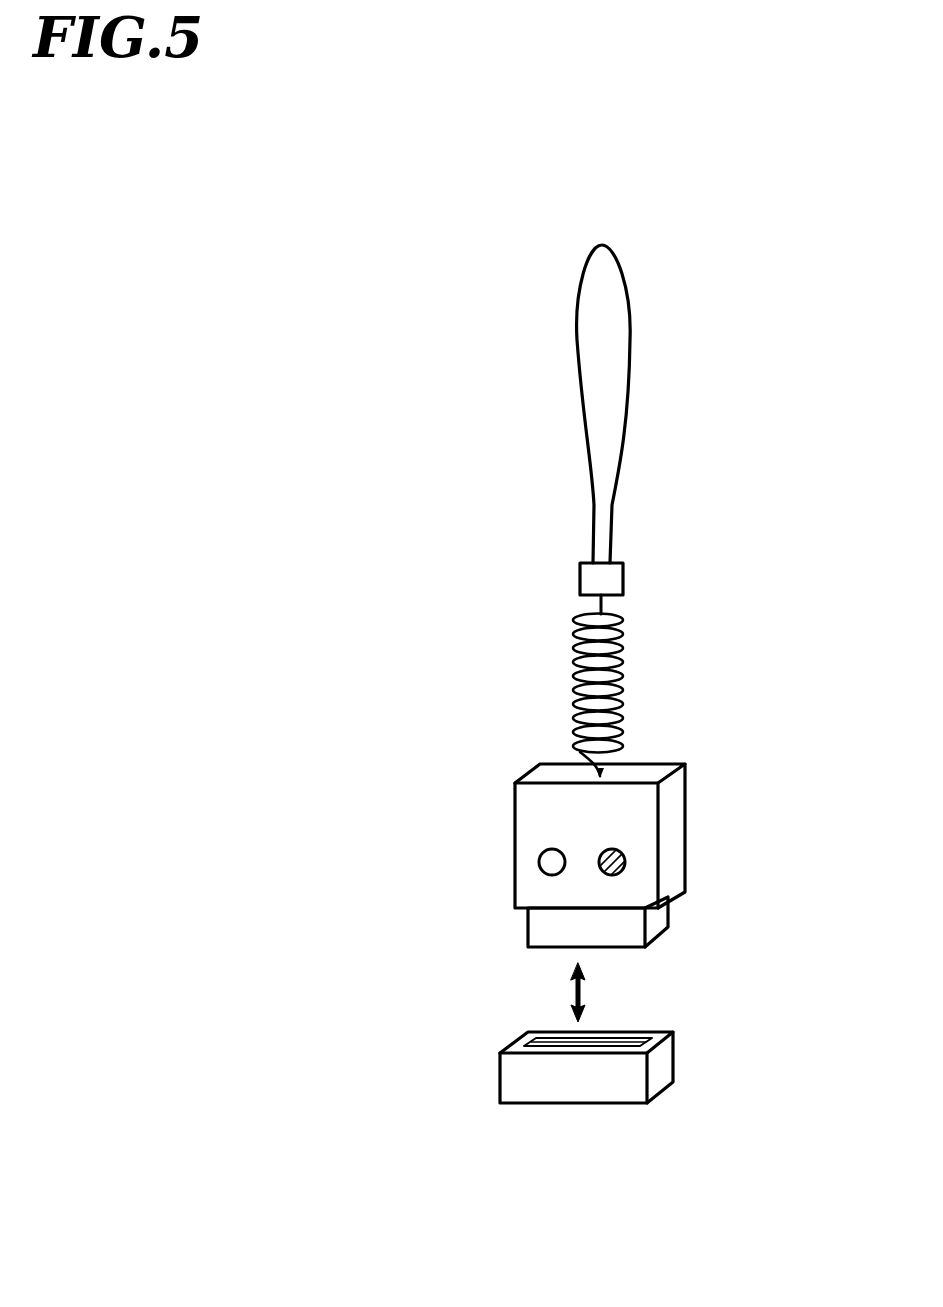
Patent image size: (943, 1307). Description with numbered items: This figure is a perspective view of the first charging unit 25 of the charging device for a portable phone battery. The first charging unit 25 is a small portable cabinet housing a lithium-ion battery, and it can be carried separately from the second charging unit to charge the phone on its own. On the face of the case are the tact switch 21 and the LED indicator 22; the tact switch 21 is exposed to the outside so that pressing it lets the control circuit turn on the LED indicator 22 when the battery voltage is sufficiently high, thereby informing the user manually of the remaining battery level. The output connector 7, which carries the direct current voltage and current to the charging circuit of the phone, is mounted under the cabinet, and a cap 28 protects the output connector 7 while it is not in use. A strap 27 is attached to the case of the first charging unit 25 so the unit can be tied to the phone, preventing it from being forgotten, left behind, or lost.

The output connector 7 is at (668, 927).
The tact switch 21 is at (548, 860).
The LED indicator 22 is at (625, 862).
The first charging unit 25 is at (656, 765).
The strap 27 is at (623, 583).
The cap 28 is at (560, 1103).